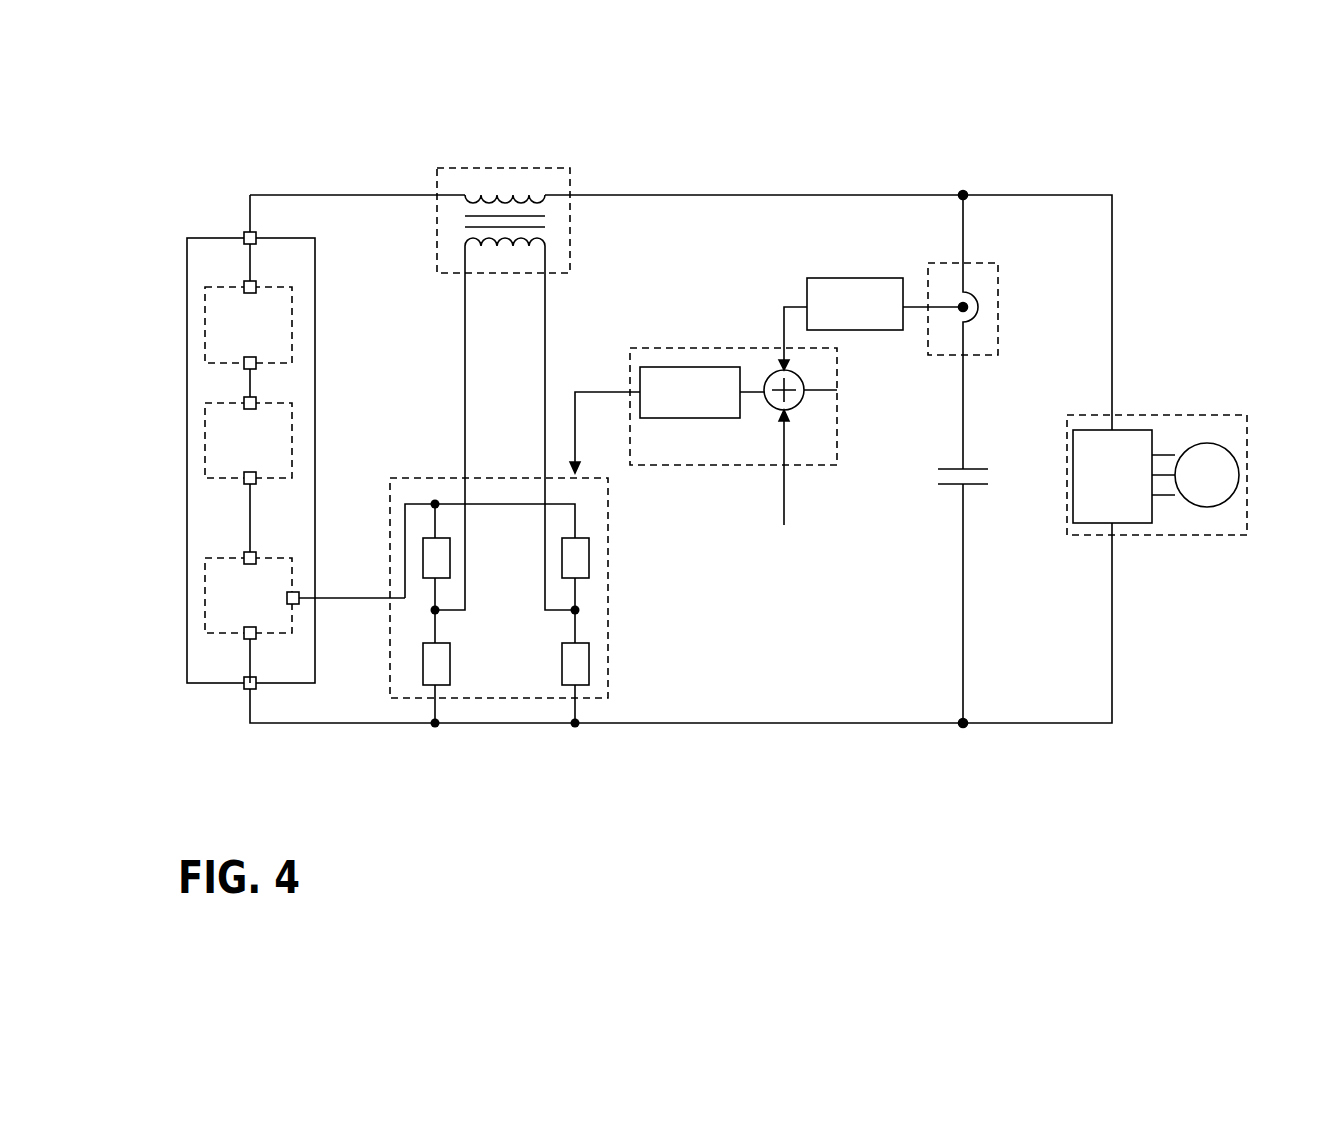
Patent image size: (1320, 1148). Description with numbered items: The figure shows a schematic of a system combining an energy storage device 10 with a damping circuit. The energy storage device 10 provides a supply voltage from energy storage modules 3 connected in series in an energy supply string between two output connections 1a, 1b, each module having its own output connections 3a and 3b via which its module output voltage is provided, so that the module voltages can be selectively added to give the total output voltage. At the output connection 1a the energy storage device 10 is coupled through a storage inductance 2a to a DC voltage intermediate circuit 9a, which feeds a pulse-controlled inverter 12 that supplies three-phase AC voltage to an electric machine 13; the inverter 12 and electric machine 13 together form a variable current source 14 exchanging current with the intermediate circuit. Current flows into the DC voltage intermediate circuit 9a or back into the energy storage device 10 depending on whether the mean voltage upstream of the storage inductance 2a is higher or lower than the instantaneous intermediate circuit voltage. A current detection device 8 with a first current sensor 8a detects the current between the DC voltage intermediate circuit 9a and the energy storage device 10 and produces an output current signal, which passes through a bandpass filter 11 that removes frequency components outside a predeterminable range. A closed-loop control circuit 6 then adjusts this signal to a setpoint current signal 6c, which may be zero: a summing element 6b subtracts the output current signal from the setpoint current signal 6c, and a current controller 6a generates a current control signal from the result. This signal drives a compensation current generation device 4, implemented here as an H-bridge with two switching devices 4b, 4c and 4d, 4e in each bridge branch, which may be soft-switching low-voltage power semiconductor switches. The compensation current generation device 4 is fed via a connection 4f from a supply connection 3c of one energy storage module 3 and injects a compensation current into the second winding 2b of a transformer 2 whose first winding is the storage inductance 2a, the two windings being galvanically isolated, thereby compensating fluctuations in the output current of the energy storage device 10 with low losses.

The output connection 1a is at (244, 235).
The output connection 1b is at (244, 688).
The energy storage device 10 is at (315, 262).
The energy storage module 3 is at (292, 318).
The output connection of energy storage module 3a is at (256, 556).
The output connection of energy storage module 3b is at (257, 638).
The supply connection 3c is at (299, 592).
The transformer 2 is at (455, 167).
The storage inductance 2a is at (505, 193).
The second winding 2b is at (505, 250).
The compensation current generation device 4 is at (430, 477).
The switching device 4b is at (450, 560).
The switching device 4c is at (450, 664).
The switching device 4d is at (589, 560).
The switching device 4e is at (589, 664).
The connection line to module tap 4f is at (360, 604).
The closed-loop control circuit 6 is at (682, 467).
The current controller 6a is at (678, 366).
The summing element 6b is at (837, 390).
The setpoint current signal 6c is at (784, 500).
The current detection device 8 is at (998, 285).
The first current sensor 8a is at (978, 307).
The DC voltage intermediate circuit 9a is at (973, 487).
The bandpass filter 11 is at (858, 277).
The inverter 12 is at (1125, 429).
The electric machine 13 is at (1200, 443).
The variable current source 14 is at (1165, 537).